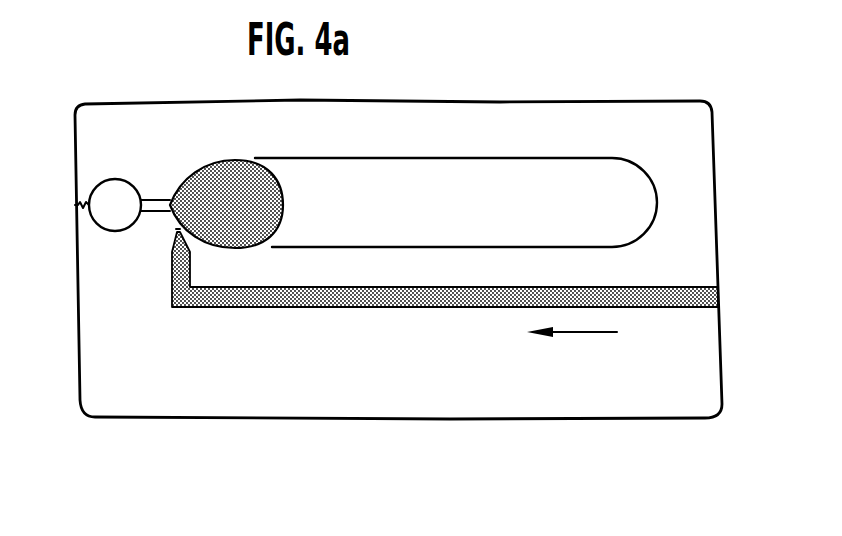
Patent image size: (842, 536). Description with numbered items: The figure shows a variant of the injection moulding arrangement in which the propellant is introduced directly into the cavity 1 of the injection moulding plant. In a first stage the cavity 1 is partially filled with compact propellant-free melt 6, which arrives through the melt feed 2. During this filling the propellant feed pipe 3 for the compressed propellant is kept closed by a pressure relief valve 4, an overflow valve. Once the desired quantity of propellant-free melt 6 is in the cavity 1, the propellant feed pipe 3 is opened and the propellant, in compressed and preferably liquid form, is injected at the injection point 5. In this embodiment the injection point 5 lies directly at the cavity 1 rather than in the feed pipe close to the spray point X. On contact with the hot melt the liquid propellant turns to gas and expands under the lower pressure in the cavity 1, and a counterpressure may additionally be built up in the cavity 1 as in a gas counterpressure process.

The cavity 1 is at (530, 182).
The melt feed 2 is at (383, 312).
The propellant feed pipe 3 is at (165, 198).
The pressure relief valve 4 is at (103, 223).
The injection point 5 is at (171, 197).
The propellant-free melt 6 is at (283, 200).
The spray point X is at (176, 232).